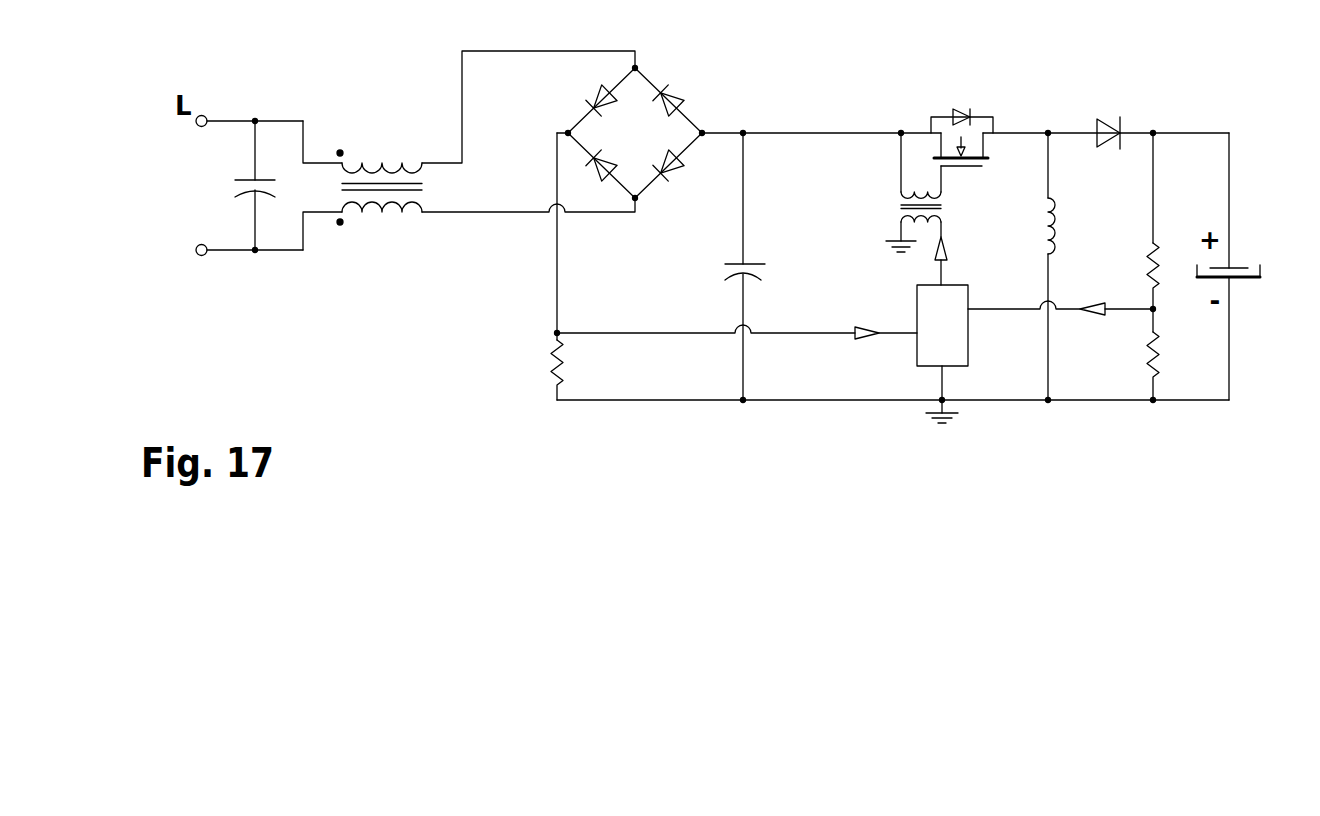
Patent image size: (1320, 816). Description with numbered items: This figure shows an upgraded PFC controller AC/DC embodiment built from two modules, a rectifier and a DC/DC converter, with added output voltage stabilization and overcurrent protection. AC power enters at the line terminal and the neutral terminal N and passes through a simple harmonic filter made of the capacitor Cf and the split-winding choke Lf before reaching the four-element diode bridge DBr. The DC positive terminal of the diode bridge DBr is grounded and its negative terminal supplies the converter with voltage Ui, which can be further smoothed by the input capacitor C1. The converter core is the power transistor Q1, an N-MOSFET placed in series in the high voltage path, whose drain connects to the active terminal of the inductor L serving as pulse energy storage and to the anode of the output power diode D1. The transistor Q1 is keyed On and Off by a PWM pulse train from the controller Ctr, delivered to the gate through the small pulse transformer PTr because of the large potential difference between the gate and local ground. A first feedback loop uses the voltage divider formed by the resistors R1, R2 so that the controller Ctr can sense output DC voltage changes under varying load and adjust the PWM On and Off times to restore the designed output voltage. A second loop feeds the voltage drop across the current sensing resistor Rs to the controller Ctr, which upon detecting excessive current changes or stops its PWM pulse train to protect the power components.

The neutral input terminal N is at (186, 233).
The capacitor Cf is at (241, 185).
The split-winding choke Lf is at (379, 176).
The diode bridge DBr is at (659, 133).
The input capacitor C1 is at (732, 266).
The current sensing element Rs is at (536, 370).
The power transistor Q1 is at (962, 133).
The pulse transformer PTr is at (939, 209).
The controller Ctr is at (1035, 354).
The inductor L is at (1064, 266).
The diode D1 is at (1115, 115).
The R1 resistor R1 is at (1133, 221).
The R2 resistor R2 is at (1133, 354).